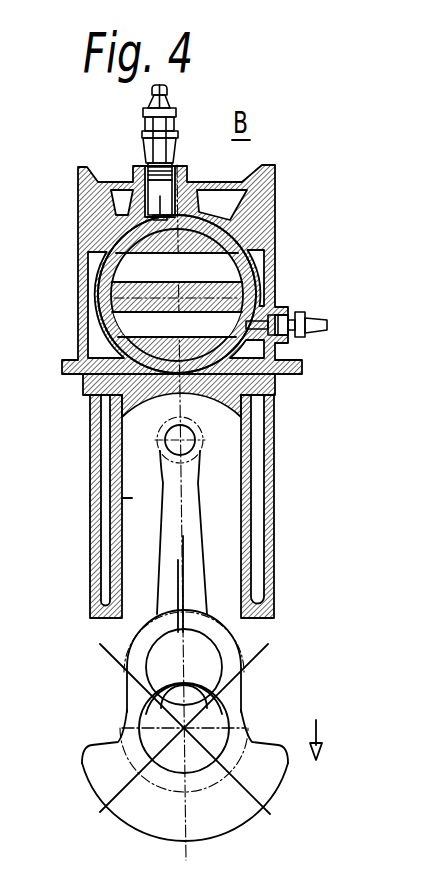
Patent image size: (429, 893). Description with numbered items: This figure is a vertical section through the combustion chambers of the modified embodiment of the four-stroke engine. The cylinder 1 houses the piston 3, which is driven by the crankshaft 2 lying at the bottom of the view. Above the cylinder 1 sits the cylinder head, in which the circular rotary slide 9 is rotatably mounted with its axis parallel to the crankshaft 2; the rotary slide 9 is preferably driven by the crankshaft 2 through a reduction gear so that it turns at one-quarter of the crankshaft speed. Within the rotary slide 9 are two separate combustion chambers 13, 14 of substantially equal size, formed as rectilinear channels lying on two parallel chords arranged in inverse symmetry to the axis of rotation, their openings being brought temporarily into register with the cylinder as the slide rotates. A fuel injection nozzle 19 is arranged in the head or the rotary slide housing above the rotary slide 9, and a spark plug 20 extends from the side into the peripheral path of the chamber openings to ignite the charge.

The cylinder 1 is at (231, 498).
The crankshaft 2 is at (213, 718).
The piston 3 is at (237, 403).
The rotary slide 9 is at (197, 230).
The combustion chamber 13 is at (210, 326).
The combustion chamber 14 is at (212, 262).
The fuel injection nozzle 19 is at (142, 140).
The spark plug 20 is at (328, 323).